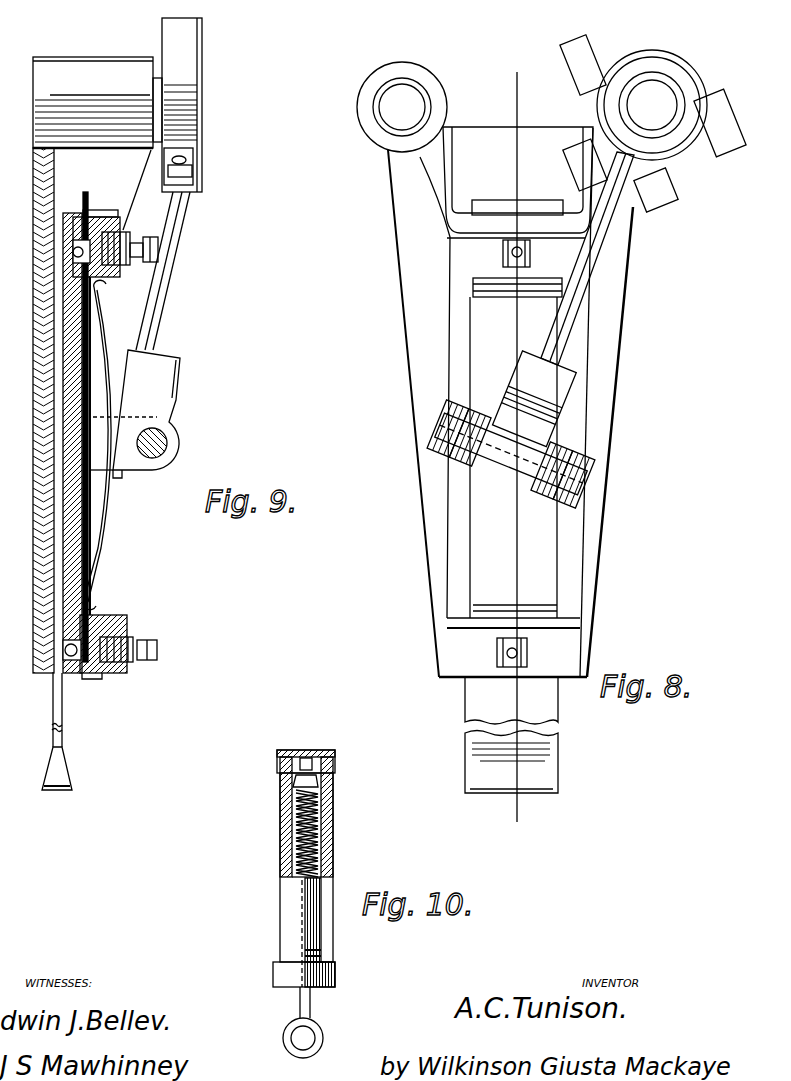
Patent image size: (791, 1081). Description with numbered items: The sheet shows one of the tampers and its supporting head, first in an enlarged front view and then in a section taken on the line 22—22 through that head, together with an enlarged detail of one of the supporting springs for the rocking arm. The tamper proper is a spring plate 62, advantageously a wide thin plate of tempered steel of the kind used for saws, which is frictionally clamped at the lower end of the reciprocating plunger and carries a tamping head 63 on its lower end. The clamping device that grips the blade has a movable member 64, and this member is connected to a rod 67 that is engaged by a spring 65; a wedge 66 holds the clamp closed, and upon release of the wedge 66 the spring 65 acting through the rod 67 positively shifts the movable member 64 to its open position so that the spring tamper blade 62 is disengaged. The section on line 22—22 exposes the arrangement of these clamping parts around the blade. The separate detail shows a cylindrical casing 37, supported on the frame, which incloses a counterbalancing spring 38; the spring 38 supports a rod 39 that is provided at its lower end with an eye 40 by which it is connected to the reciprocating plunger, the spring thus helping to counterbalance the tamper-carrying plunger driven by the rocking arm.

In FIG. 8, the section line 22 is at (511, 451).
In FIG. 10, the cylindrical casing 37 is at (280, 818).
In FIG. 10, the counterbalancing spring 38 is at (319, 838).
In FIG. 10, the rod 39 is at (300, 997).
In FIG. 10, the eye 40 is at (285, 1040).
In FIG. 9, the spring plate 62 is at (63, 703).
In FIG. 8, the spring plate 62 is at (469, 700).
In FIG. 9, the tamping head 63 is at (64, 765).
In FIG. 8, the tamping head 63 is at (467, 749).
In FIG. 9, the movable member 64 is at (77, 547).
In FIG. 8, the movable member 64 is at (574, 530).
In FIG. 9, the spring 65 is at (138, 232).
In FIG. 9, the wedge 66 is at (153, 403).
In FIG. 8, the wedge 66 is at (545, 423).
In FIG. 9, the rod 67 is at (159, 249).
In FIG. 8, the rod 67 is at (503, 256).